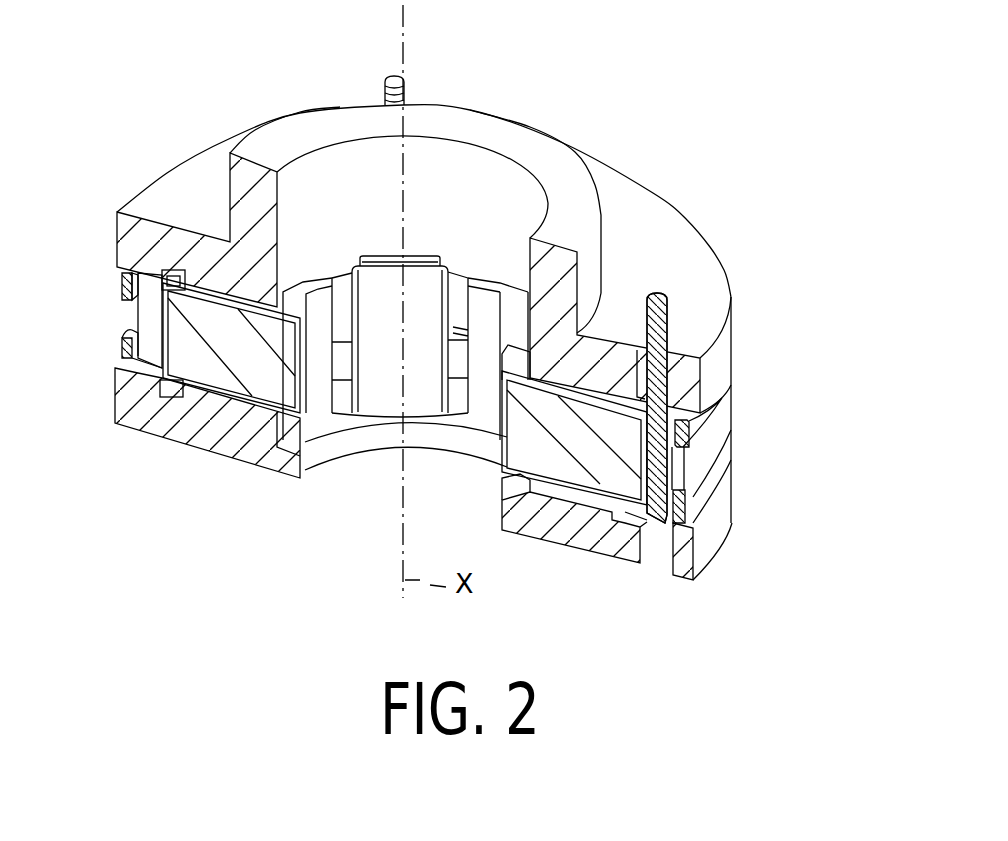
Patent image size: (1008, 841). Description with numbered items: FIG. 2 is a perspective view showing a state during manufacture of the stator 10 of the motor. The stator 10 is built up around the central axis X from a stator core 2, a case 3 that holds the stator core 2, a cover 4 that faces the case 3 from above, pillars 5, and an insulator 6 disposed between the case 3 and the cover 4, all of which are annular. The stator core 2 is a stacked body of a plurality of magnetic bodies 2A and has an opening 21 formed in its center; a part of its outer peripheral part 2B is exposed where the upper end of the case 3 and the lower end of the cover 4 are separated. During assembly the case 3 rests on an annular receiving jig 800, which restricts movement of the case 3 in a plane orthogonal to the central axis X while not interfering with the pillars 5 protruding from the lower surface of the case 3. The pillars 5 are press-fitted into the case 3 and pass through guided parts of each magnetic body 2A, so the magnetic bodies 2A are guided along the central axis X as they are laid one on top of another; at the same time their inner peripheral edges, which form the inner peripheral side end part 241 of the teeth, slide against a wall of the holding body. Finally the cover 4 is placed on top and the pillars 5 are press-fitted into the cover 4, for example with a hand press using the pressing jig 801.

The pressing jig 801 is at (617, 187).
The receiving jig 800 is at (205, 425).
The outer peripheral part 2B is at (162, 313).
The magnetic body 2A is at (270, 375).
The inner peripheral side end part 241 is at (313, 397).
The insulator 6 is at (383, 388).
The opening 21 is at (500, 427).
The stator core 2 is at (592, 467).
The pillar 5 is at (657, 293).
The cover 4 is at (693, 427).
The case 3 is at (693, 500).
The stator 10 is at (767, 423).